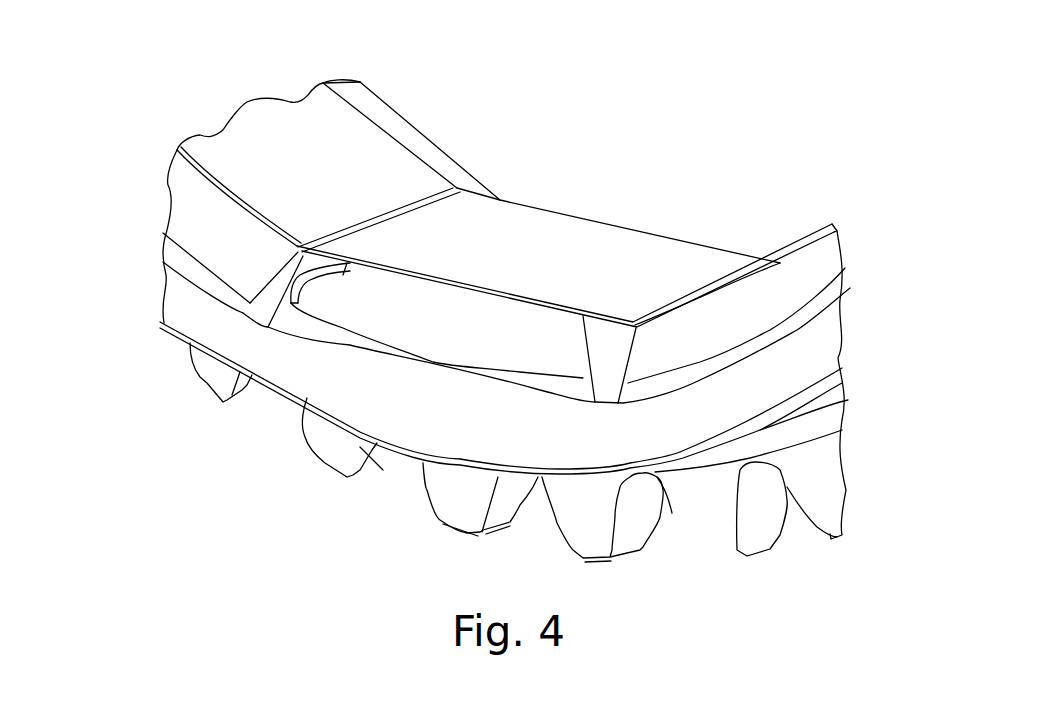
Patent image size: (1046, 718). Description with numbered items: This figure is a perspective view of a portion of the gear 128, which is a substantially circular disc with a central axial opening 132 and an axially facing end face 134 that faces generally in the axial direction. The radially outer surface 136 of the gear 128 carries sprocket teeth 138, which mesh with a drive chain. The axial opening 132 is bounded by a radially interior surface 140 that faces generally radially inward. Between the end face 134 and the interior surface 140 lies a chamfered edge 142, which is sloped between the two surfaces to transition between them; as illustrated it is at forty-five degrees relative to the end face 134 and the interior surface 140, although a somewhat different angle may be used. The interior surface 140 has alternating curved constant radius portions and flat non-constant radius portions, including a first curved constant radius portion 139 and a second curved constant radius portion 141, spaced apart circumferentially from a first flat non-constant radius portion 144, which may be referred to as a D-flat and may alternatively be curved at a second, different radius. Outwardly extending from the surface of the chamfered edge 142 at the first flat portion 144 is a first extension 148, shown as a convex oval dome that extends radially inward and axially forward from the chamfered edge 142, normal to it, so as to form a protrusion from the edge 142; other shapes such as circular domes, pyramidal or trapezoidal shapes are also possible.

The gear 128 is at (204, 138).
The central axial opening 132 is at (623, 185).
The end face 134 is at (247, 357).
The radially outer surface 136 is at (175, 340).
The sprocket teeth 138 is at (323, 453).
The first curved constant radius portion 139 is at (297, 172).
The interior surface 140 is at (350, 190).
The second curved constant radius portion 141 is at (693, 304).
The chamfered edge 142 is at (183, 222).
The first flat non-constant radius portion 144 is at (657, 263).
The first extension 148 is at (437, 320).